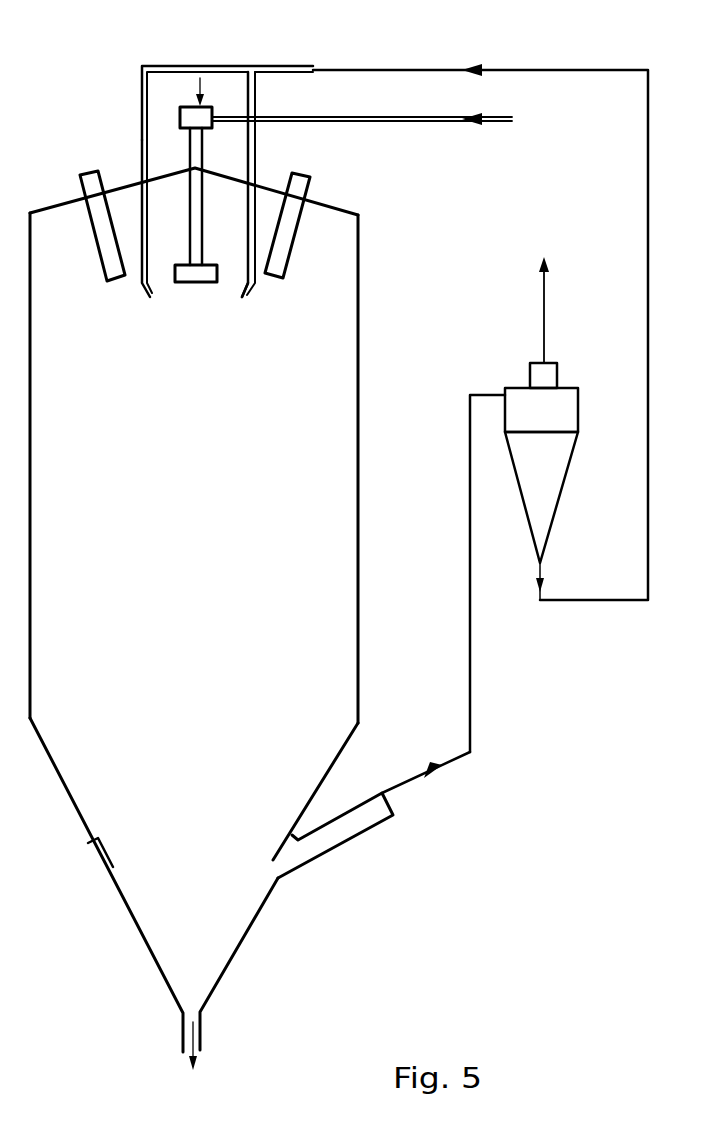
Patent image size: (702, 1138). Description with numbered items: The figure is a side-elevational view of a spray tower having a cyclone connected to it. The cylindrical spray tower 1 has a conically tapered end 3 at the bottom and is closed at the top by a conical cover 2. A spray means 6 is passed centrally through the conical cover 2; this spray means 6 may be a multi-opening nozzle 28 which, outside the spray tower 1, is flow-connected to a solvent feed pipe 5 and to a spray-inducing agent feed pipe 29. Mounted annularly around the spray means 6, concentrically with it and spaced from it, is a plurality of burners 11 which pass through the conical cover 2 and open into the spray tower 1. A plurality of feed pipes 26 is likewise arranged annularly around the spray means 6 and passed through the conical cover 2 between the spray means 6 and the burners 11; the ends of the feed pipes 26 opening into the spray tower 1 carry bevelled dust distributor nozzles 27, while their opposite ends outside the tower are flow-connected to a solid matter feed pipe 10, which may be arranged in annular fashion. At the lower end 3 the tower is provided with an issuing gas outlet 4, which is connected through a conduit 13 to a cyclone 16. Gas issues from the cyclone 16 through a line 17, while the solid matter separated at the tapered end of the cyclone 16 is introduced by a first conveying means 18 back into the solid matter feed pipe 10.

The spray tower 1 is at (358, 506).
The conical cover 2 is at (55, 207).
The conically tapered end 3 is at (78, 810).
The issuing gas outlet 4 is at (338, 848).
The solvent feed pipe 5 is at (433, 122).
The spray means 6 is at (198, 296).
The solid matter feed pipe 10 is at (218, 65).
The burners 11 is at (105, 270).
The conduit 13 is at (472, 648).
The cyclone 16 is at (580, 410).
The line 17 is at (546, 318).
The first conveying means 18 is at (646, 232).
The feed pipes 26 is at (148, 240).
The bevelled dust distributor nozzles 27 is at (246, 294).
The multi-opening nozzle 28 is at (204, 240).
The spray-inducing agent feed pipe 29 is at (235, 101).